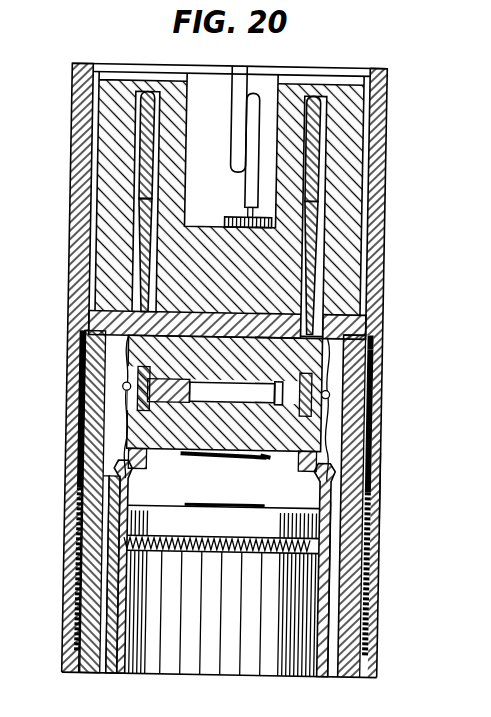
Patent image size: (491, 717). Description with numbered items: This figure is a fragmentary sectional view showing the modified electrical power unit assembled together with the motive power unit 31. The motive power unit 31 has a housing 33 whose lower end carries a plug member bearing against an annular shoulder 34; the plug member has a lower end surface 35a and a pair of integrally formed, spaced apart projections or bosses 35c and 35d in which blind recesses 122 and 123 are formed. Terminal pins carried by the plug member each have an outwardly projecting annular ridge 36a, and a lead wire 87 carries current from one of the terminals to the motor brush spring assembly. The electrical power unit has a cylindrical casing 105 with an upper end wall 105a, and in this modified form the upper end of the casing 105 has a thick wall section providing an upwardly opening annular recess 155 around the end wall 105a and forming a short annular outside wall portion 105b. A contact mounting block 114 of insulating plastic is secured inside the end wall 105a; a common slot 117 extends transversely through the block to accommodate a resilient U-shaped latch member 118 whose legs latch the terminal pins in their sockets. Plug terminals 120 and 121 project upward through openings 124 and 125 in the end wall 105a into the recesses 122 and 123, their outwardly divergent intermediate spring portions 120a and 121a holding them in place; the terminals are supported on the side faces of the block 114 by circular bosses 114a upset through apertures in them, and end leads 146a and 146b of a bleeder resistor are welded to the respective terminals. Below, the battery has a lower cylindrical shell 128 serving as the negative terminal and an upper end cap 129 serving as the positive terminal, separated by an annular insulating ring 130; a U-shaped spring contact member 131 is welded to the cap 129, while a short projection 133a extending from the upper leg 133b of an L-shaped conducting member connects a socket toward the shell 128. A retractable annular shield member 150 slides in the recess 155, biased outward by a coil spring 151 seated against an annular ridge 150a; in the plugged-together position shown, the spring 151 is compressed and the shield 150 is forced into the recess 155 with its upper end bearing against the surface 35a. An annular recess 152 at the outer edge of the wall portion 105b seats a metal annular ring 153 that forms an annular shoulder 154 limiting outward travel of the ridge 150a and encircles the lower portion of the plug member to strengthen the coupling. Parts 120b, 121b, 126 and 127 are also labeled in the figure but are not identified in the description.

The motive power unit 31 is at (68, 70).
The housing 33 is at (68, 91).
The annular shoulder 34 is at (68, 239).
The lower end surface of plug member 35a is at (88, 313).
The projection or boss 35c is at (100, 146).
The projection or boss 35d is at (355, 168).
The annular ridge 36a is at (236, 200).
The lead wire 87 is at (242, 70).
The casing 105 is at (380, 649).
The end wall 105a is at (336, 306).
The outside wall portion 105b is at (373, 483).
The contact mounting block 114 is at (80, 455).
The circular projections or bosses 114a is at (80, 351).
The common slot 117 is at (177, 449).
The latch member 118 is at (122, 380).
The plug terminal 120 is at (151, 98).
The intermediate spring portion 120a is at (152, 204).
The left contact base 120b is at (110, 667).
The plug terminal 121 is at (308, 98).
The intermediate spring portion 121a is at (322, 210).
The right contact base 121b is at (337, 680).
The blind recess 122 is at (137, 101).
The blind recess 123 is at (345, 103).
The opening 124 is at (72, 268).
The opening 125 is at (366, 303).
The electrode element 126 is at (207, 672).
The cup 127 is at (310, 675).
The lower cylindrical shell or casing 128 is at (155, 658).
The upper end cap 129 is at (128, 513).
The annular insulating ring 130 is at (178, 549).
The spring contact member 131 is at (187, 503).
The short projection 133a is at (196, 458).
The upper leg of L-shaped conducting member 133b is at (247, 461).
The end lead of resistor 146a is at (140, 393).
The end lead of resistor 146b is at (350, 409).
The retractable annular shield member 150 is at (342, 434).
The annular ridge 150a is at (78, 538).
The coil spring 151 is at (364, 607).
The annular recess 152 is at (370, 373).
The metal annular ring 153 is at (374, 324).
The annular shoulder 154 is at (376, 340).
The annular recess 155 is at (374, 587).